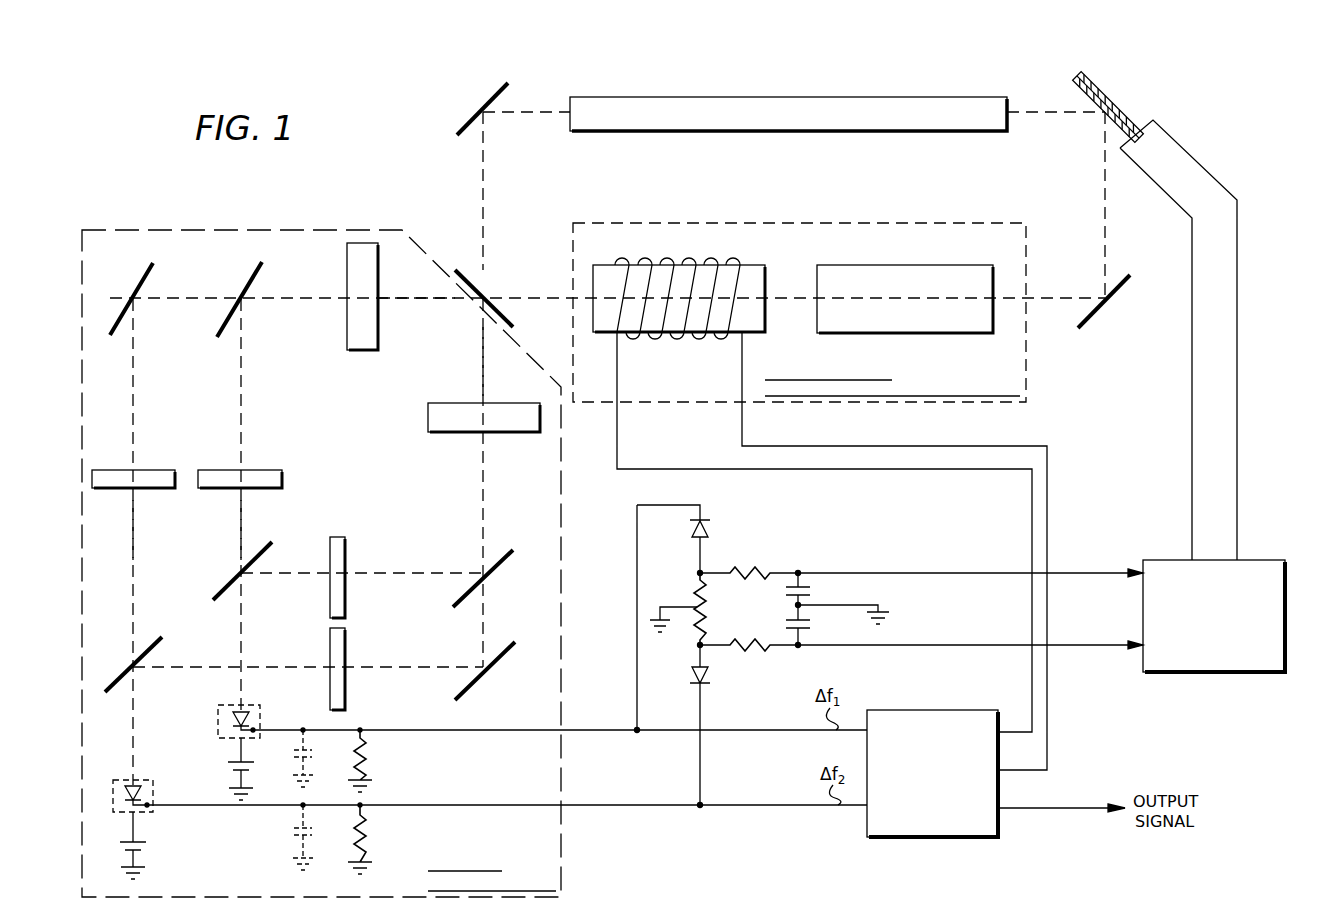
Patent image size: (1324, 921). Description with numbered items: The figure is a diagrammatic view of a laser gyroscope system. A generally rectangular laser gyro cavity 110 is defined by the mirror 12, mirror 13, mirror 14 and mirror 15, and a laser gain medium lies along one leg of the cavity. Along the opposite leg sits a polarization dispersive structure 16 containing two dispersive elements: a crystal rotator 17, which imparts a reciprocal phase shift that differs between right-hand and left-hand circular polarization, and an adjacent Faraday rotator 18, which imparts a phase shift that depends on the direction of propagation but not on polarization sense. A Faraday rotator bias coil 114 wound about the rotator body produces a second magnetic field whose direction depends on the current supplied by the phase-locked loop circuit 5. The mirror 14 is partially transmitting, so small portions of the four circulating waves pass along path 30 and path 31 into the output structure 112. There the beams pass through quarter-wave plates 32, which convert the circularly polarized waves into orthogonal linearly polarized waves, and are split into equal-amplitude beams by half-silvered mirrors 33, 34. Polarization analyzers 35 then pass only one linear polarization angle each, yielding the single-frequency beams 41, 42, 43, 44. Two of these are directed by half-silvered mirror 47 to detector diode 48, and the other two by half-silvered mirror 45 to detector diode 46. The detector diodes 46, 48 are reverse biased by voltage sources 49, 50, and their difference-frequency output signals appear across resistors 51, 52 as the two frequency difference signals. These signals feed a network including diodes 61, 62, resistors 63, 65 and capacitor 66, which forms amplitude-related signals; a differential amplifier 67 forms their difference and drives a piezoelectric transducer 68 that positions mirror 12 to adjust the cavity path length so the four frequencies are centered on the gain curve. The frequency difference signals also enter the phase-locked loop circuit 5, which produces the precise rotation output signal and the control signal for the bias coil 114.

The phase-locked loop circuit 5 is at (1000, 830).
The mirror 12 is at (1082, 94).
The mirror 13 is at (1115, 302).
The mirror 14 is at (468, 282).
The mirror 15 is at (492, 96).
The polarization dispersive structure 16 is at (1027, 385).
The crystal rotator 17 is at (972, 268).
The Faraday rotator 18 is at (757, 287).
The path 30 is at (440, 302).
The path 31 is at (487, 364).
The quarter-wave plates 32 is at (448, 403).
The half-silvered mirror 33 is at (247, 282).
The half-silvered mirror 34 is at (137, 285).
The polarization analyzers 35 is at (110, 470).
The beam 41 is at (135, 530).
The beam 42 is at (286, 666).
The beam 43 is at (292, 574).
The beam 44 is at (243, 525).
The half-silvered mirror 45 is at (155, 646).
The detector diode 46 is at (113, 780).
The half-silvered mirror 47 is at (262, 557).
The detector diode 48 is at (216, 712).
The voltage source 49 is at (140, 846).
The voltage source 50 is at (228, 768).
The resistor 51 is at (372, 830).
The resistor 52 is at (372, 760).
The diode 61 is at (713, 676).
The diode 62 is at (713, 527).
The resistor 63 is at (708, 606).
The resistor 65 is at (752, 568).
The capacitor 66 is at (812, 594).
The differential amplifier 67 is at (1160, 558).
The piezoelectric transducer 68 is at (1079, 80).
The laser gyro cavity 110 is at (1000, 197).
The output structure 112 is at (565, 882).
The Faraday rotator bias coil 114 is at (722, 263).